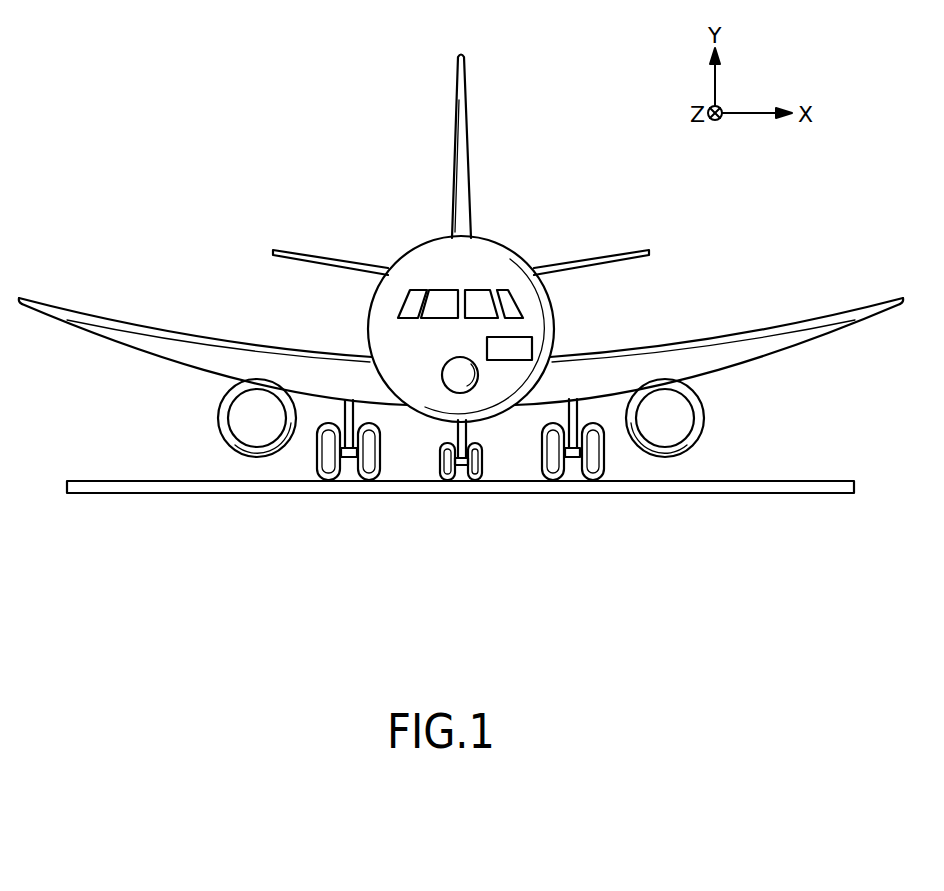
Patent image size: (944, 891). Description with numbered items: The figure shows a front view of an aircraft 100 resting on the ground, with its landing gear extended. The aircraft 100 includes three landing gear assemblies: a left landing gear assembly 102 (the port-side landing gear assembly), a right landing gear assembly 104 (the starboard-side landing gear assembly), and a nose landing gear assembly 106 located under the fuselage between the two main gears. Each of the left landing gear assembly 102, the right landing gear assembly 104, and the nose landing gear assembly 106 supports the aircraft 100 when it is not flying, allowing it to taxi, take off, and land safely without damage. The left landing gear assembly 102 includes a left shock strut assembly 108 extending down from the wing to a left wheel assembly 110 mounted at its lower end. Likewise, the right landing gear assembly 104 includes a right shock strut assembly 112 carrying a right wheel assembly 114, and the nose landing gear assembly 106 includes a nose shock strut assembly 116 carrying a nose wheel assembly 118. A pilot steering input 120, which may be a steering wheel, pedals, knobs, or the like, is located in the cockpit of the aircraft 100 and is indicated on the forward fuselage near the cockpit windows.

The aircraft 100 is at (296, 138).
The left landing gear assembly 102 is at (623, 466).
The right landing gear assembly 104 is at (320, 398).
The nose landing gear assembly 106 is at (425, 477).
The left shock strut assembly 108 is at (568, 410).
The left wheel assembly 110 is at (573, 457).
The right shock strut assembly 112 is at (345, 438).
The right wheel assembly 114 is at (350, 457).
The nose shock strut assembly 116 is at (467, 425).
The nose wheel assembly 118 is at (462, 465).
The pilot steering input 120 is at (522, 348).